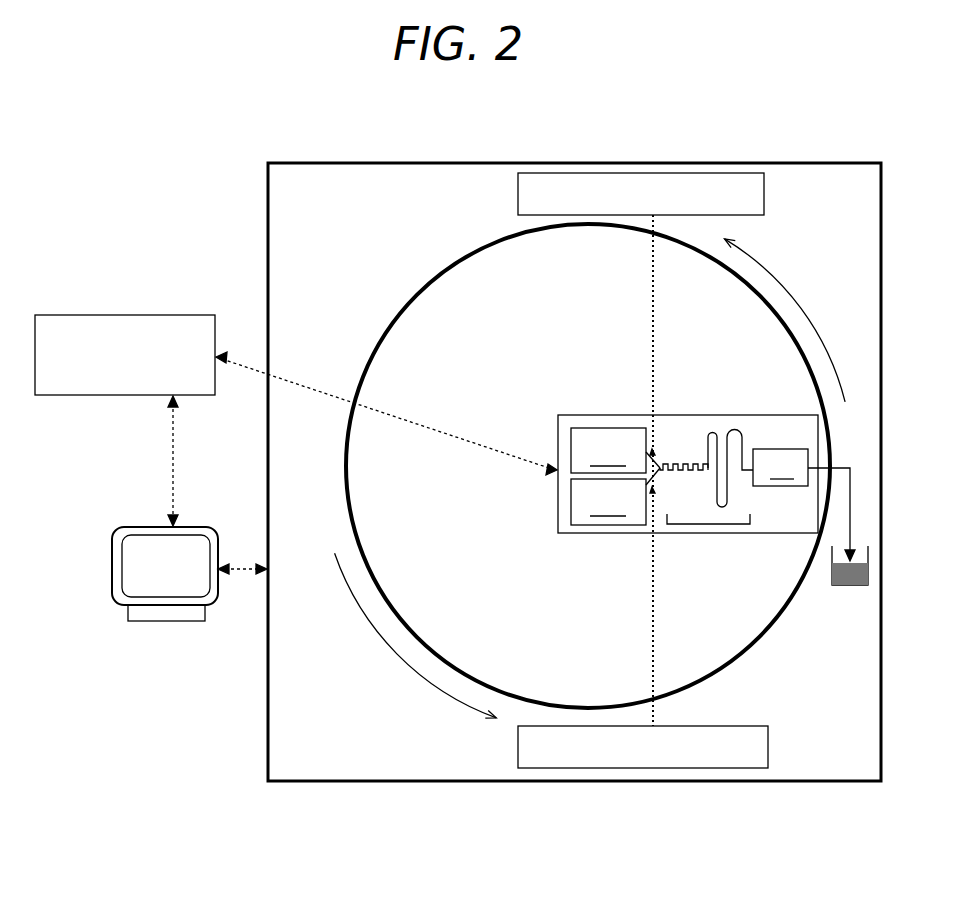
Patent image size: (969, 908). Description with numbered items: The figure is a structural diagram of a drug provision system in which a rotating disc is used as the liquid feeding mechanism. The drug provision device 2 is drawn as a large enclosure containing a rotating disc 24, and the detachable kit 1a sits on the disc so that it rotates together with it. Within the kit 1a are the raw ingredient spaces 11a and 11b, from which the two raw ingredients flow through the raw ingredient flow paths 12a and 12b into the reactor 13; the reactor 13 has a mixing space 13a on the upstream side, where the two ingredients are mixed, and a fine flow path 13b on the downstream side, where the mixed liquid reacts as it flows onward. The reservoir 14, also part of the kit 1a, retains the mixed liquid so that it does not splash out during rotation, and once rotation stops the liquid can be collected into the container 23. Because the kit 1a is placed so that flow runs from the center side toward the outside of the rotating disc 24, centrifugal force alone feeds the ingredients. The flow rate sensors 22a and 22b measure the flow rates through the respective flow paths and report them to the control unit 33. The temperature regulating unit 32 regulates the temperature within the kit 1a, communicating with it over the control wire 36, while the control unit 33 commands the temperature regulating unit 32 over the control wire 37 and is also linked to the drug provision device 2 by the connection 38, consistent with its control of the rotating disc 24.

The drug provision device 2 is at (322, 162).
The rotating disc 24 is at (478, 250).
The flow rate sensor 22a is at (764, 194).
The flow rate sensor 22b is at (768, 746).
The kit 1a is at (558, 415).
The raw ingredient space 11a is at (608, 450).
The raw ingredient space 11b is at (608, 502).
The raw ingredient flow path 12a is at (657, 450).
The raw ingredient flow path 12b is at (660, 487).
The reactor 13 is at (707, 524).
The mixing space 13a is at (680, 462).
The fine flow path 13b is at (735, 443).
The reservoir 14 is at (804, 505).
The container 23 is at (848, 586).
The temperature regulating unit 32 is at (125, 315).
The control unit 33 is at (147, 527).
The control wire 36 is at (226, 355).
The control wire 37 is at (172, 445).
The signal line 38 is at (233, 565).